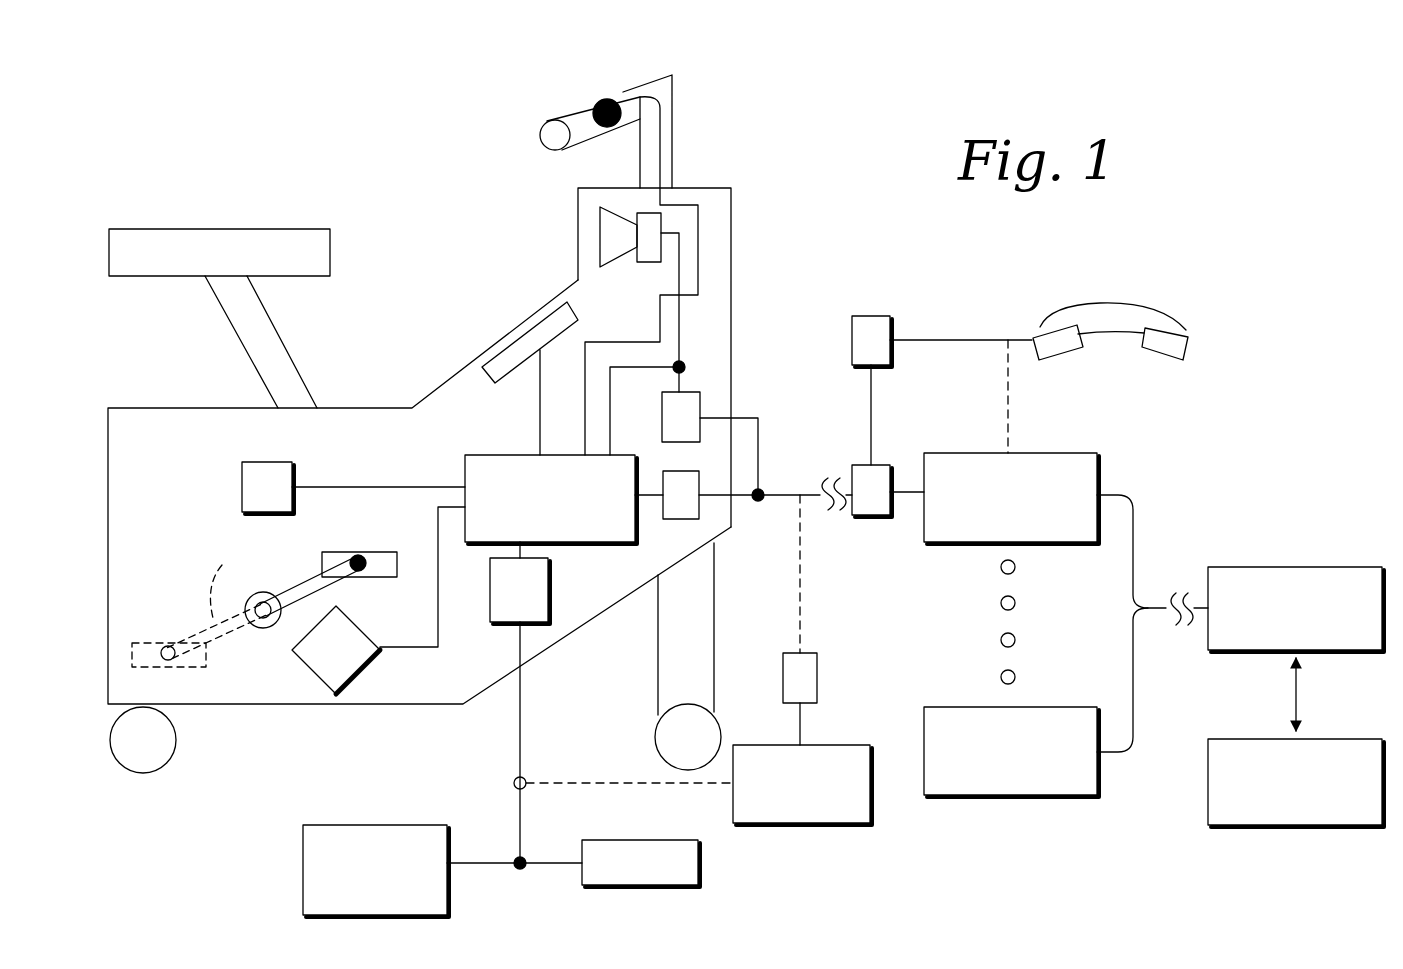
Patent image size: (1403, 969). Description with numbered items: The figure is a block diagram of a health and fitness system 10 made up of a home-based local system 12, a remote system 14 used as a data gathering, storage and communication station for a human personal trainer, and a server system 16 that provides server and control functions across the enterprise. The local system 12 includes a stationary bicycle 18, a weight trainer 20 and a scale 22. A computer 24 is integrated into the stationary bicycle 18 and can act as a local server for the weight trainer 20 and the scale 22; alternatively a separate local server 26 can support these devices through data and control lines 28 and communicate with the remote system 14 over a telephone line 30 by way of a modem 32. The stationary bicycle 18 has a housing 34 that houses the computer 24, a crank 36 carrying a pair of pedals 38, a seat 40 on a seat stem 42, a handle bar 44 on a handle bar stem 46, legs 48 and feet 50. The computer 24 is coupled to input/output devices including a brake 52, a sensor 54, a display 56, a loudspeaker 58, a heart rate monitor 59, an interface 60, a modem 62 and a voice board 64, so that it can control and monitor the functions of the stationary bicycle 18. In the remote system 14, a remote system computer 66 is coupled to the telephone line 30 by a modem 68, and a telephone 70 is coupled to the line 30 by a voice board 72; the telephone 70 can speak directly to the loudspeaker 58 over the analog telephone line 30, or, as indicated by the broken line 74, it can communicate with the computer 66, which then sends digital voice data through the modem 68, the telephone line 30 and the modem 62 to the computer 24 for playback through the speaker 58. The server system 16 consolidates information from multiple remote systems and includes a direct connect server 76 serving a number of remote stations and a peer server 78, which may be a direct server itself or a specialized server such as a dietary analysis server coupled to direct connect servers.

The health and fitness system 10 is at (888, 190).
The local system 12 is at (250, 805).
The remote system 14 is at (1014, 810).
The server system 16 is at (1303, 515).
The stationary bicycle 18 is at (732, 287).
The weight trainer 20 is at (382, 825).
The scale 22 is at (700, 862).
The computer 24 is at (503, 460).
The local server 26 is at (827, 812).
The data and control lines 28 is at (605, 780).
The telephone line 30 is at (838, 470).
The modem 32 is at (818, 682).
The housing 34 is at (146, 412).
The crank 36 is at (297, 588).
The pedals 38 is at (334, 552).
The seat 40 is at (233, 232).
The seat stem 42 is at (268, 337).
The handle bar 44 is at (578, 115).
The handle bar stem 46 is at (663, 140).
The legs 48 is at (688, 623).
The feet 50 is at (126, 768).
The brake 52 is at (272, 462).
The sensor 54 is at (360, 673).
The display 56 is at (560, 322).
The loudspeaker 58 is at (652, 225).
The heart rate monitor 59 is at (608, 95).
The interface 60 is at (540, 590).
The modem 62 is at (697, 480).
The voice board 64 is at (693, 406).
The remote system computer 66 is at (1100, 472).
The modem 68 is at (870, 517).
The telephone 70 is at (1105, 313).
The voice board 72 is at (870, 320).
The broken line 74 is at (1012, 410).
The direct connect server 76 is at (1265, 573).
The peer server 78 is at (1215, 780).